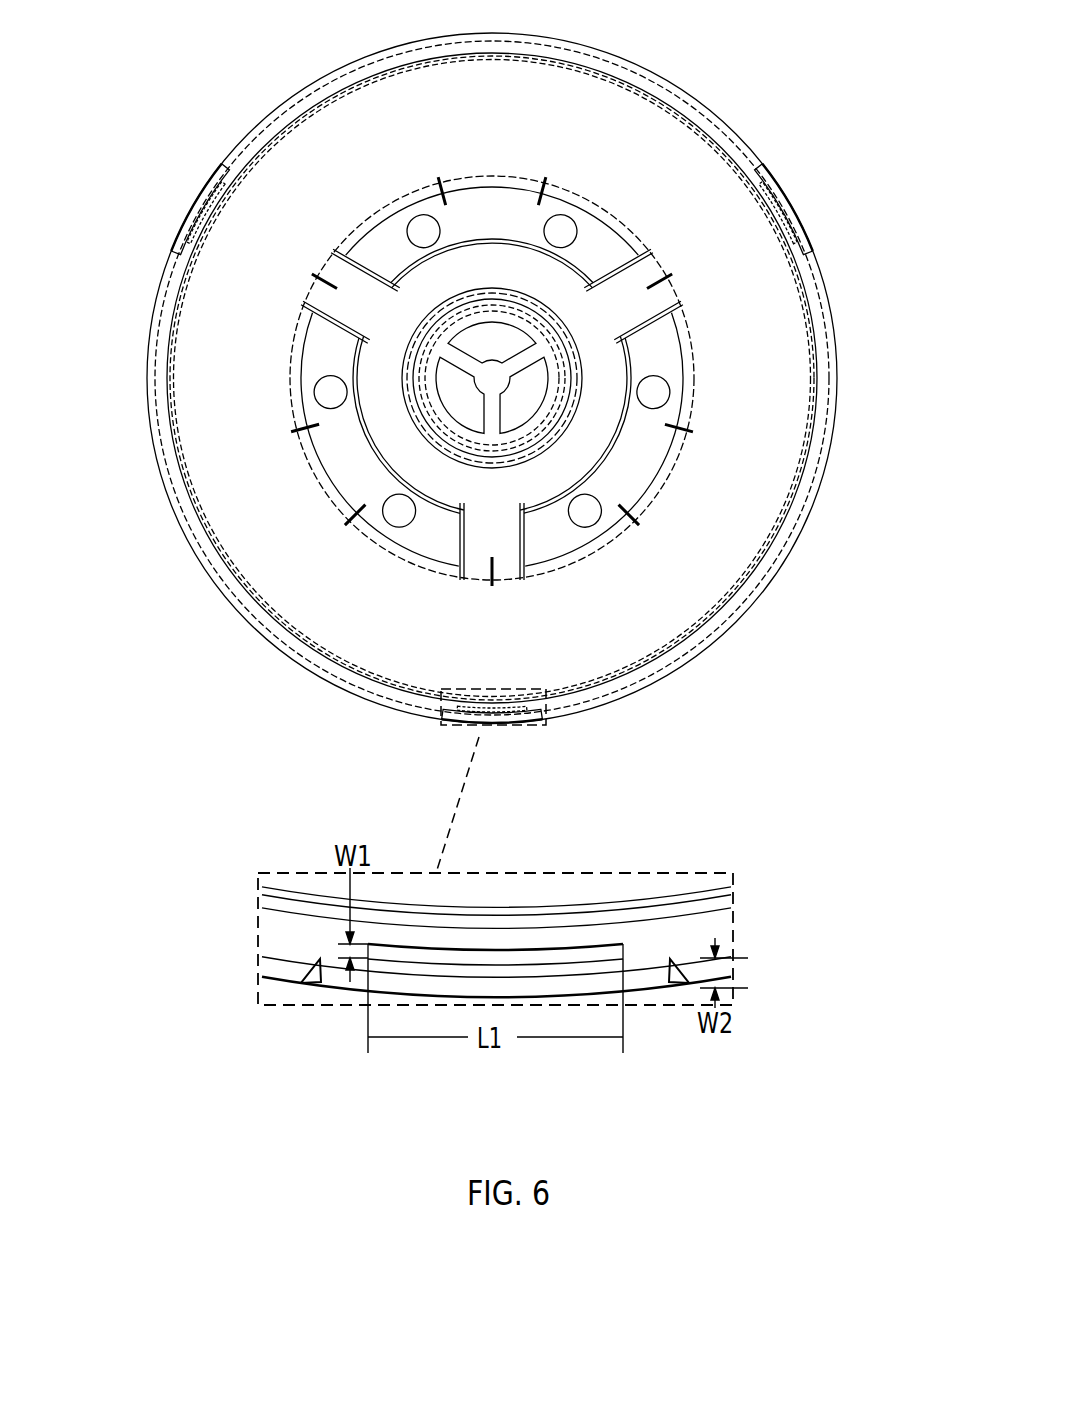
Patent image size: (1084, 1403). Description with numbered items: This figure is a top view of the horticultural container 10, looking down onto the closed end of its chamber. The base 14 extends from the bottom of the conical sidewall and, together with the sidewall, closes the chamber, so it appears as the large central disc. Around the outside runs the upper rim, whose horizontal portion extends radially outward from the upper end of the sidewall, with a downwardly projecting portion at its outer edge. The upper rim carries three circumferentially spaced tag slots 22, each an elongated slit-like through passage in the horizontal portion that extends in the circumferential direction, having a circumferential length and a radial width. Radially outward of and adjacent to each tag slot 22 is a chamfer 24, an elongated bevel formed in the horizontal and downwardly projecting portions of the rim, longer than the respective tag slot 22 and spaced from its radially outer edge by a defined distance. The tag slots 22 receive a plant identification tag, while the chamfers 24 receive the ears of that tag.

The horticultural container 10 is at (499, 377).
The base 14 is at (226, 396).
The tag slot 22 is at (558, 960).
The chamfer 24 is at (650, 977).